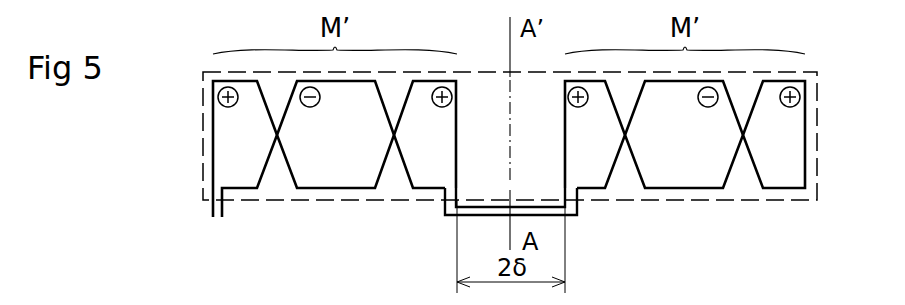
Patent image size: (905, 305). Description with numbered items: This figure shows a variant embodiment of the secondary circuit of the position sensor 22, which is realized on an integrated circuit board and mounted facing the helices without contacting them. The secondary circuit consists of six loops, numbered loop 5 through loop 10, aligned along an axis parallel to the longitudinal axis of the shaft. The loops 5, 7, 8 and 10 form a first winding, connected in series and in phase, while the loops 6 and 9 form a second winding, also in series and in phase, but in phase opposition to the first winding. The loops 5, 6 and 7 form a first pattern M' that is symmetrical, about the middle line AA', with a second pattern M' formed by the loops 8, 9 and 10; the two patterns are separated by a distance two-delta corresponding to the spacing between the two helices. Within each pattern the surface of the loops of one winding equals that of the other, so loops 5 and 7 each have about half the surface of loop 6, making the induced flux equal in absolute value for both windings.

The loop 5 is at (245, 149).
The loop 6 is at (335, 134).
The loop 7 is at (425, 134).
The loop 8 is at (595, 134).
The loop 9 is at (684, 134).
The loop 10 is at (774, 134).
The position sensor 22 is at (203, 152).